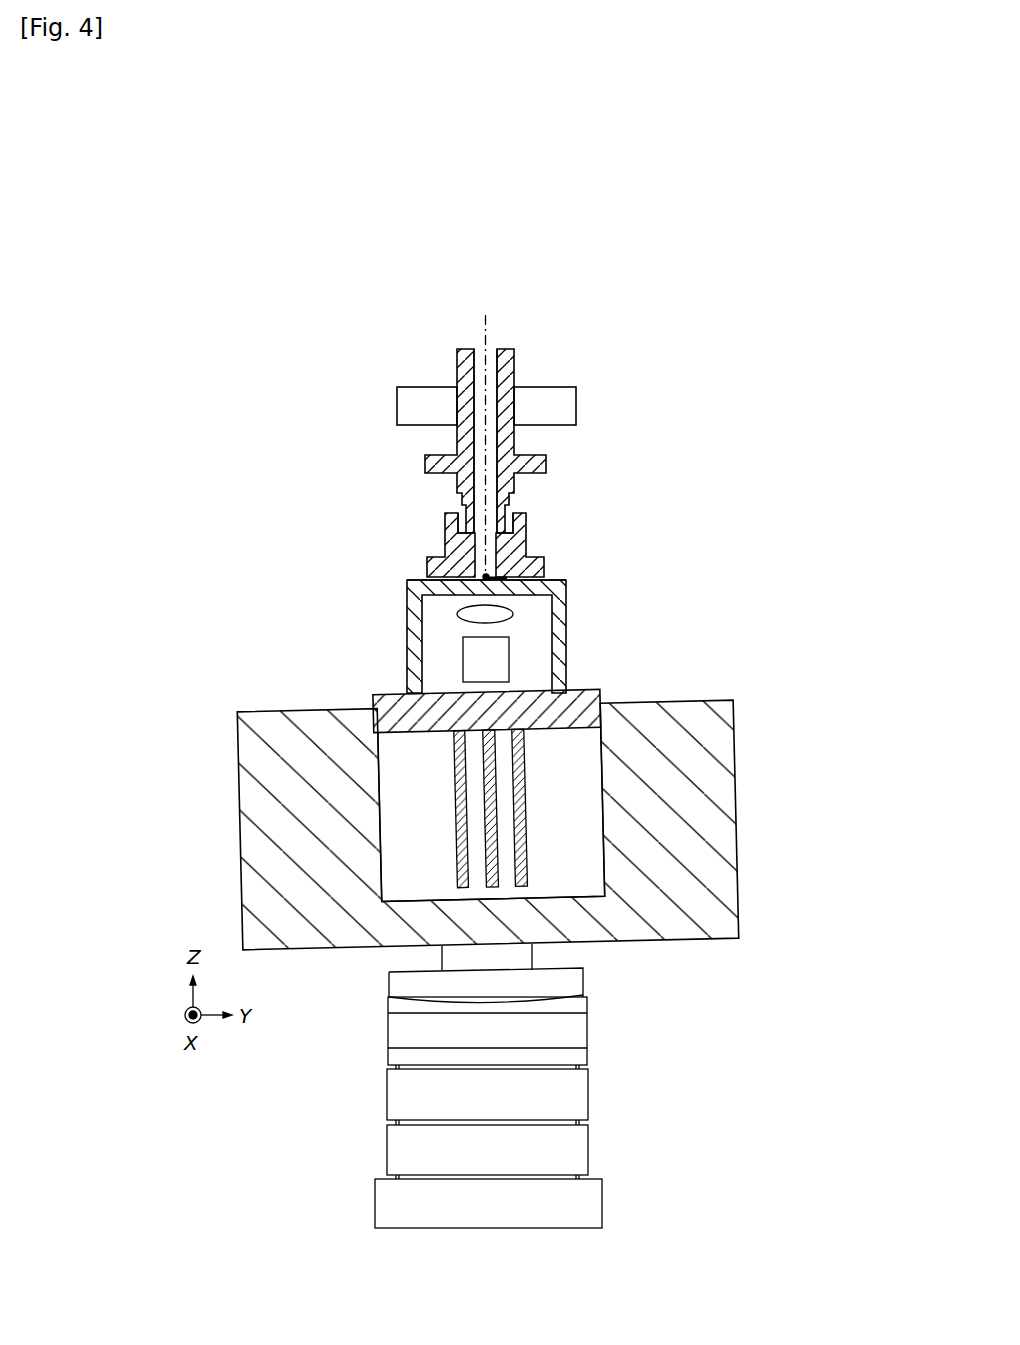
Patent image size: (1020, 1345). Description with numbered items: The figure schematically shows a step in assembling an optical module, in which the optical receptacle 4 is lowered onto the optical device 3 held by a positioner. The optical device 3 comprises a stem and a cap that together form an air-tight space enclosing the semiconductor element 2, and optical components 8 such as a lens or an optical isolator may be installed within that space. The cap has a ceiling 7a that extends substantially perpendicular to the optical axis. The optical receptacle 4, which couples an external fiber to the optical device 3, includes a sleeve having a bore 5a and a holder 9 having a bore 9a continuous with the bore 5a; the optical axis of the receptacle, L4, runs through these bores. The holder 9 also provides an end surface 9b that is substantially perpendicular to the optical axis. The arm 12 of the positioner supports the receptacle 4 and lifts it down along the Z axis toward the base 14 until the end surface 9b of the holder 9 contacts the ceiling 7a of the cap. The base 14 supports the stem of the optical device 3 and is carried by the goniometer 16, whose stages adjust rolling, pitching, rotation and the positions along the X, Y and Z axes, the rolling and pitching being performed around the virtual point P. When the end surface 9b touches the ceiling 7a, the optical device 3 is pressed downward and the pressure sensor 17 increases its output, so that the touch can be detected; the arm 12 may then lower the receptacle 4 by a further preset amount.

The semiconductor element 2 is at (475, 662).
The optical device 3 is at (407, 612).
The optical receptacle 4 is at (455, 363).
The bore 5a is at (479, 358).
The ceiling 7a is at (417, 580).
The optical components 8 is at (515, 618).
The holder 9 is at (545, 567).
The bore 9a is at (478, 550).
The end surface 9b is at (508, 599).
The arm 12 is at (578, 409).
The base 14 is at (702, 810).
The goniometer 16 is at (641, 972).
The pressure sensor 17 is at (523, 957).
The optical axis of the receptacle L4 is at (490, 325).
The virtual point P is at (490, 576).